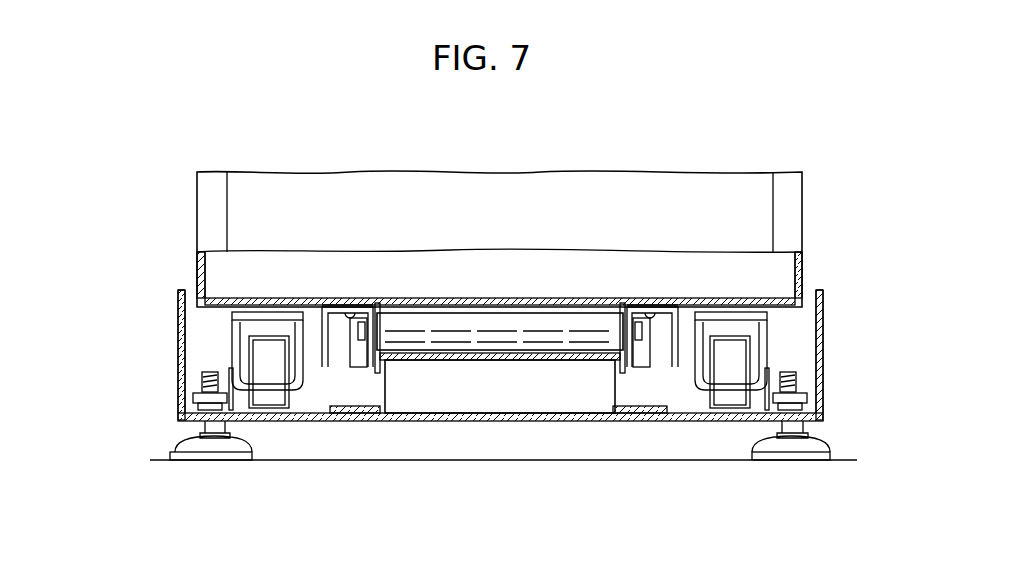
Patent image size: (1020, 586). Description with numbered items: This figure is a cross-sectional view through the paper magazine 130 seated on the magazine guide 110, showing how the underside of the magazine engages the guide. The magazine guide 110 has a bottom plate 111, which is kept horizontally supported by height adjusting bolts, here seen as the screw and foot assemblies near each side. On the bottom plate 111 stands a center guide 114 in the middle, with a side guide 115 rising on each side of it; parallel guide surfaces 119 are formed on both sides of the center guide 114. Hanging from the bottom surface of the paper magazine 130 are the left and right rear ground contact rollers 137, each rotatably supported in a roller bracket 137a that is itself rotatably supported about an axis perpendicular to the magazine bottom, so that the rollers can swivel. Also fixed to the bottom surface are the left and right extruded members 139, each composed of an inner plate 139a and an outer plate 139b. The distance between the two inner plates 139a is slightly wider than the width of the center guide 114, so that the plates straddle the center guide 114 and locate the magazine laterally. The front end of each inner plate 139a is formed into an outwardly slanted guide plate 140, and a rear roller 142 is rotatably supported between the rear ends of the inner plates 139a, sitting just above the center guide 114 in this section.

The paper magazine 130 is at (183, 169).
The magazine guide 110 is at (165, 397).
The bottom plate 111 is at (518, 420).
The center guide 114 is at (440, 357).
The side guide 115 is at (178, 318).
The parallel guide surfaces 119 is at (346, 413).
The rear ground contact roller 137 is at (270, 393).
The roller bracket 137a is at (233, 330).
The extruded member 139 is at (345, 308).
The inner plate 139a is at (372, 306).
The outer plate 139b is at (326, 325).
The guide plate 140 is at (357, 360).
The rear roller 142 is at (512, 328).